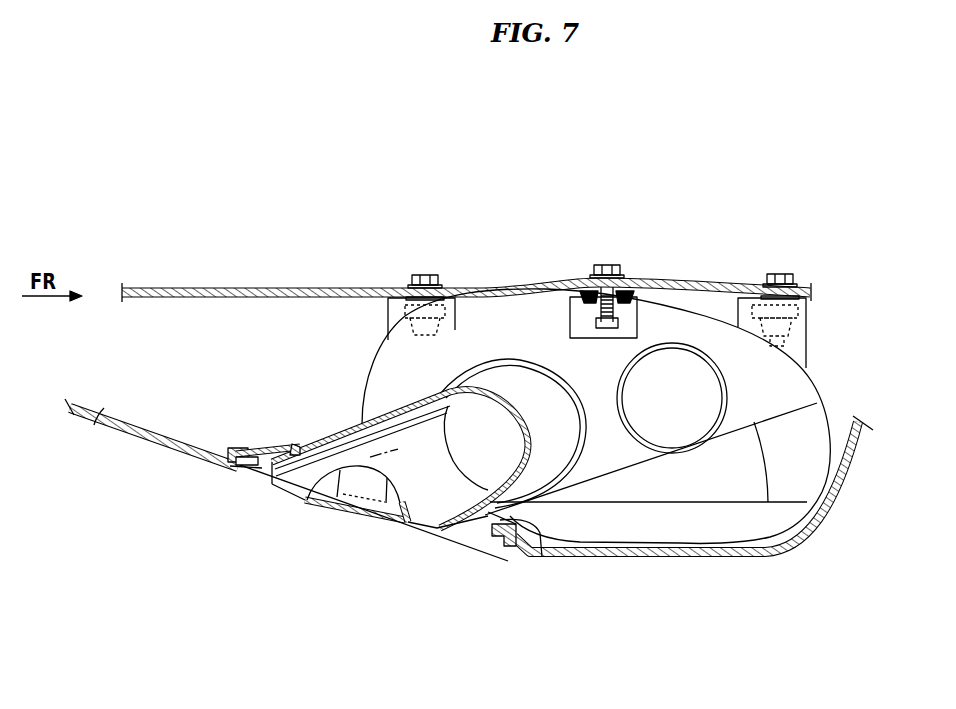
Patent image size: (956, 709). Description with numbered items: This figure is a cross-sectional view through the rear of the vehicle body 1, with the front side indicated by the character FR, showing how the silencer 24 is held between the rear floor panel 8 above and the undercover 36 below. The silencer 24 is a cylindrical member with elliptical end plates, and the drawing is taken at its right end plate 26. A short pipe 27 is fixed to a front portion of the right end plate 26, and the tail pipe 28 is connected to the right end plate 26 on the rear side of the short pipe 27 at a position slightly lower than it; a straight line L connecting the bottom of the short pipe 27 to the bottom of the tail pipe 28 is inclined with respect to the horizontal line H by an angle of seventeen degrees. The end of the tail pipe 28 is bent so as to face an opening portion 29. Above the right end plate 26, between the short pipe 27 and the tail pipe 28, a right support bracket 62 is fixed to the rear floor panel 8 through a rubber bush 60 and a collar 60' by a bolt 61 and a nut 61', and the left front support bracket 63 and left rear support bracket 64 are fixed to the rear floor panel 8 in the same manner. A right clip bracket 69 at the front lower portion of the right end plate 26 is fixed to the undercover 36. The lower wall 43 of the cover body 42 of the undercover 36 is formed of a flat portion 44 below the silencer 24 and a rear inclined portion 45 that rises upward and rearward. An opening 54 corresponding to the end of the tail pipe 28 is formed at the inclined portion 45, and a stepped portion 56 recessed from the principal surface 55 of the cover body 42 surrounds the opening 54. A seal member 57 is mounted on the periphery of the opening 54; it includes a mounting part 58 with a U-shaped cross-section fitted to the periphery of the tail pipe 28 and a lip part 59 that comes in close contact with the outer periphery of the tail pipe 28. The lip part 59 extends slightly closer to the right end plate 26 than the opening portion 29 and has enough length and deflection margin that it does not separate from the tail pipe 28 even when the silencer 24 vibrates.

The vehicle body 1 is at (679, 212).
The rear floor panel 8 is at (232, 288).
The silencer 24 is at (360, 371).
The right end plate 26 is at (683, 523).
The short pipe 27 is at (727, 389).
The tail pipe 28 is at (527, 386).
The opening portion 29 is at (294, 498).
The undercover 36 is at (361, 508).
The cover body 42 is at (195, 468).
The lower wall 43 is at (469, 484).
The flat portion 44 is at (657, 558).
The inclined portion 45 is at (130, 437).
The opening 54 is at (262, 465).
The principal surface 55 is at (93, 425).
The stepped portion 56 is at (242, 469).
The seal member 57 is at (387, 501).
The mounting part 58 is at (235, 447).
The lip part 59 is at (282, 447).
The rubber bush 60 is at (648, 272).
The collar 60' is at (569, 269).
The bolt 61 is at (602, 264).
The nut 61' is at (631, 326).
The right support bracket 62 is at (585, 338).
The left front support bracket 63 is at (800, 346).
The left rear support bracket 64 is at (390, 317).
The right clip bracket 69 is at (355, 488).
The straight line L is at (620, 468).
The horizontal line H is at (695, 502).